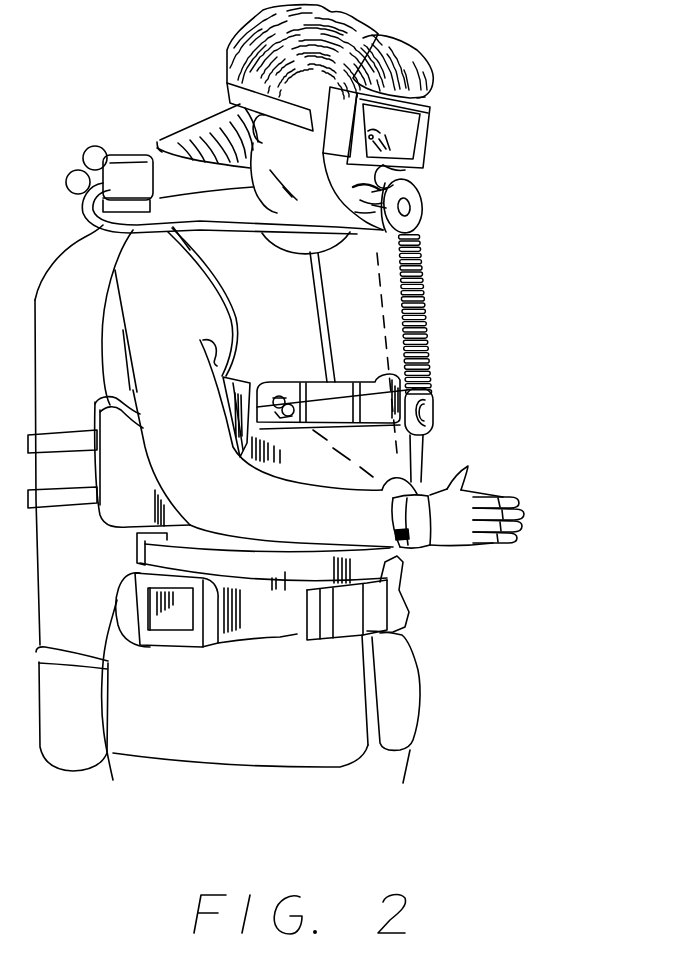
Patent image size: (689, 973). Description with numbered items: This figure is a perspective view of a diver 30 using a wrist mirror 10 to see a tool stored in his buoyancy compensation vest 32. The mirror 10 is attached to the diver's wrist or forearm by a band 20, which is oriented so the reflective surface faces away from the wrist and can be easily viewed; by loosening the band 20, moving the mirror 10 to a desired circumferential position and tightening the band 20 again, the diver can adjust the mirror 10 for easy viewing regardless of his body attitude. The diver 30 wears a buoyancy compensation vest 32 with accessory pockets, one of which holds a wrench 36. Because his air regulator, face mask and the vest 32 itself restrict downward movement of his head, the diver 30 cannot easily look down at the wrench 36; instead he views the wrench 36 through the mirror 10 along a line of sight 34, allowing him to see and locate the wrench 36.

The diver 30 is at (540, 82).
The buoyancy compensation vest 32 is at (400, 280).
The line of sight 34 is at (387, 318).
The wrench 36 is at (405, 388).
The mirror 10 is at (420, 480).
The band 20 is at (413, 545).